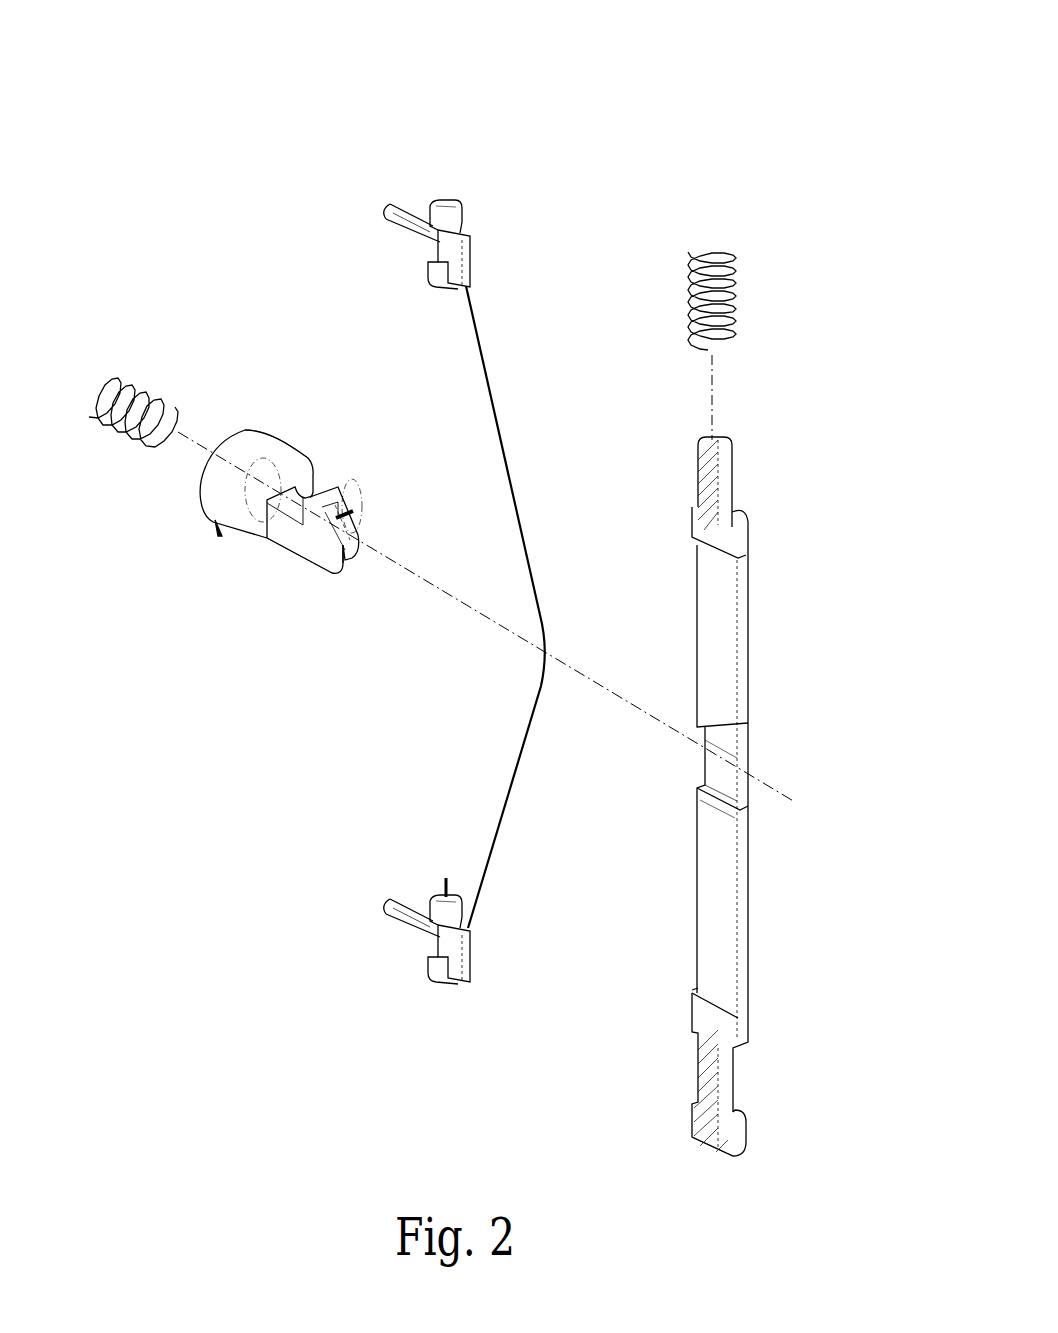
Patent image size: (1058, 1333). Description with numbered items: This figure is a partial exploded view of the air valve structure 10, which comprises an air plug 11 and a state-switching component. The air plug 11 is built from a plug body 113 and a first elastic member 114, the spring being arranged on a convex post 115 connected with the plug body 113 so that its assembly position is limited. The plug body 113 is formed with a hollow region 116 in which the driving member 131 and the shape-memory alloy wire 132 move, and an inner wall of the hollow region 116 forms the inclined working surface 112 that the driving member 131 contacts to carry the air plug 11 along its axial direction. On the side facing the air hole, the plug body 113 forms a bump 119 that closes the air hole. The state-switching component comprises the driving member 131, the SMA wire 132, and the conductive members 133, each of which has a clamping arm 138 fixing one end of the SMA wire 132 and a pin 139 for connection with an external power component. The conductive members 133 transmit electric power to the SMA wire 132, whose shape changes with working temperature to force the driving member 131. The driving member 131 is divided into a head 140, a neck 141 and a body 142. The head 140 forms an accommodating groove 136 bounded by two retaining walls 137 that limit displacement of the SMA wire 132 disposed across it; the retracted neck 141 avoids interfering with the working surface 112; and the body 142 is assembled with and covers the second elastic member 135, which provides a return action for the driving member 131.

The air valve structure 10 is at (599, 30).
The air plug 11 is at (826, 335).
The working surface 112 is at (752, 728).
The plug body 113 is at (755, 600).
The first elastic member 114 is at (742, 318).
The convex post 115 is at (700, 462).
The hollow region 116 is at (690, 908).
The bump 119 is at (750, 1140).
The driving member 131 is at (218, 540).
The shape-memory alloy wire 132 is at (522, 778).
The conductive member 133 is at (444, 876).
The second elastic member 135 is at (130, 458).
The accommodating groove 136 is at (358, 512).
The retaining walls 137 is at (347, 560).
The clamping arm 138 is at (446, 982).
The pin 139 is at (392, 910).
The head 140 is at (305, 480).
The neck 141 is at (290, 540).
The body 142 is at (234, 452).